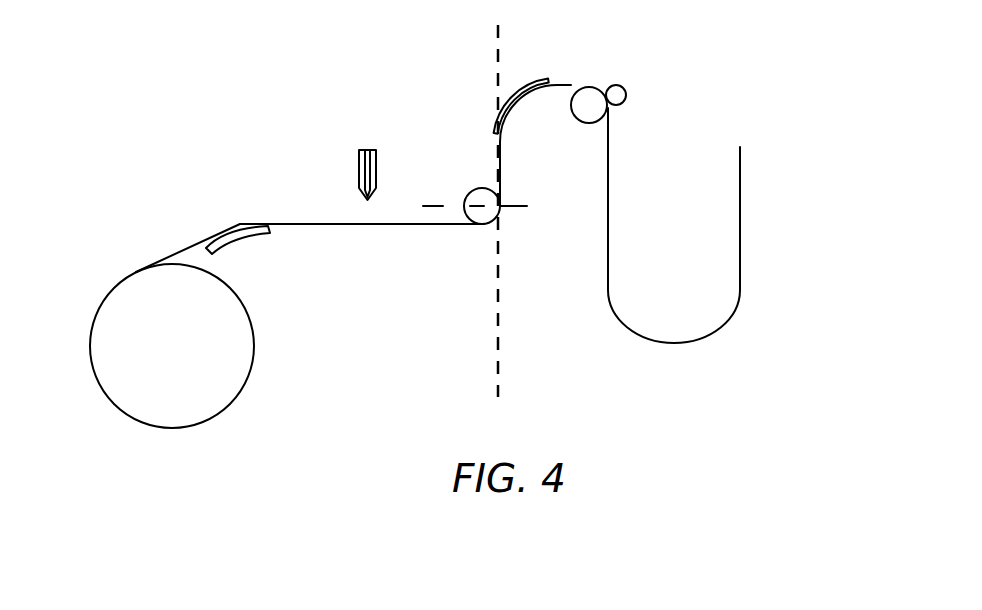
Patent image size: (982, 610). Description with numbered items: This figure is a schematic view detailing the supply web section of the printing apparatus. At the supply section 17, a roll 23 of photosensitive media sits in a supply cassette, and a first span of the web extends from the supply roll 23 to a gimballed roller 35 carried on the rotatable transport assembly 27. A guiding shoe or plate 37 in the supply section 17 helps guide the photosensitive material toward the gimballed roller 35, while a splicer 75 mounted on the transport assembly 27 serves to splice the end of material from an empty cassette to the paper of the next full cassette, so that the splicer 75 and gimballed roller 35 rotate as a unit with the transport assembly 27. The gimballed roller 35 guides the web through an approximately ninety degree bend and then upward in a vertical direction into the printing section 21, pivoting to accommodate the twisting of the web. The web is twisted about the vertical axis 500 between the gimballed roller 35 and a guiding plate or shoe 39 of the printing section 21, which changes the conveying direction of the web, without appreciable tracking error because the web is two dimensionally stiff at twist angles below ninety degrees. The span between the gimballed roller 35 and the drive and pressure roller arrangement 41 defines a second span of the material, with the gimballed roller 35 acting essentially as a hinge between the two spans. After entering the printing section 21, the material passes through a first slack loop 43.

The supply section 17 is at (346, 308).
The printing section 21 is at (718, 106).
The roll 23 is at (132, 397).
The rotatable transport assembly 27 is at (300, 200).
The gimballed roller 35 is at (480, 190).
The guiding shoe or plate 37 is at (237, 236).
The guiding plate or shoe 39 is at (523, 86).
The drive and pressure roller arrangement 41 is at (600, 82).
The first slack loop 43 is at (722, 322).
The splicer 75 is at (359, 168).
The vertical axis 500 is at (497, 62).